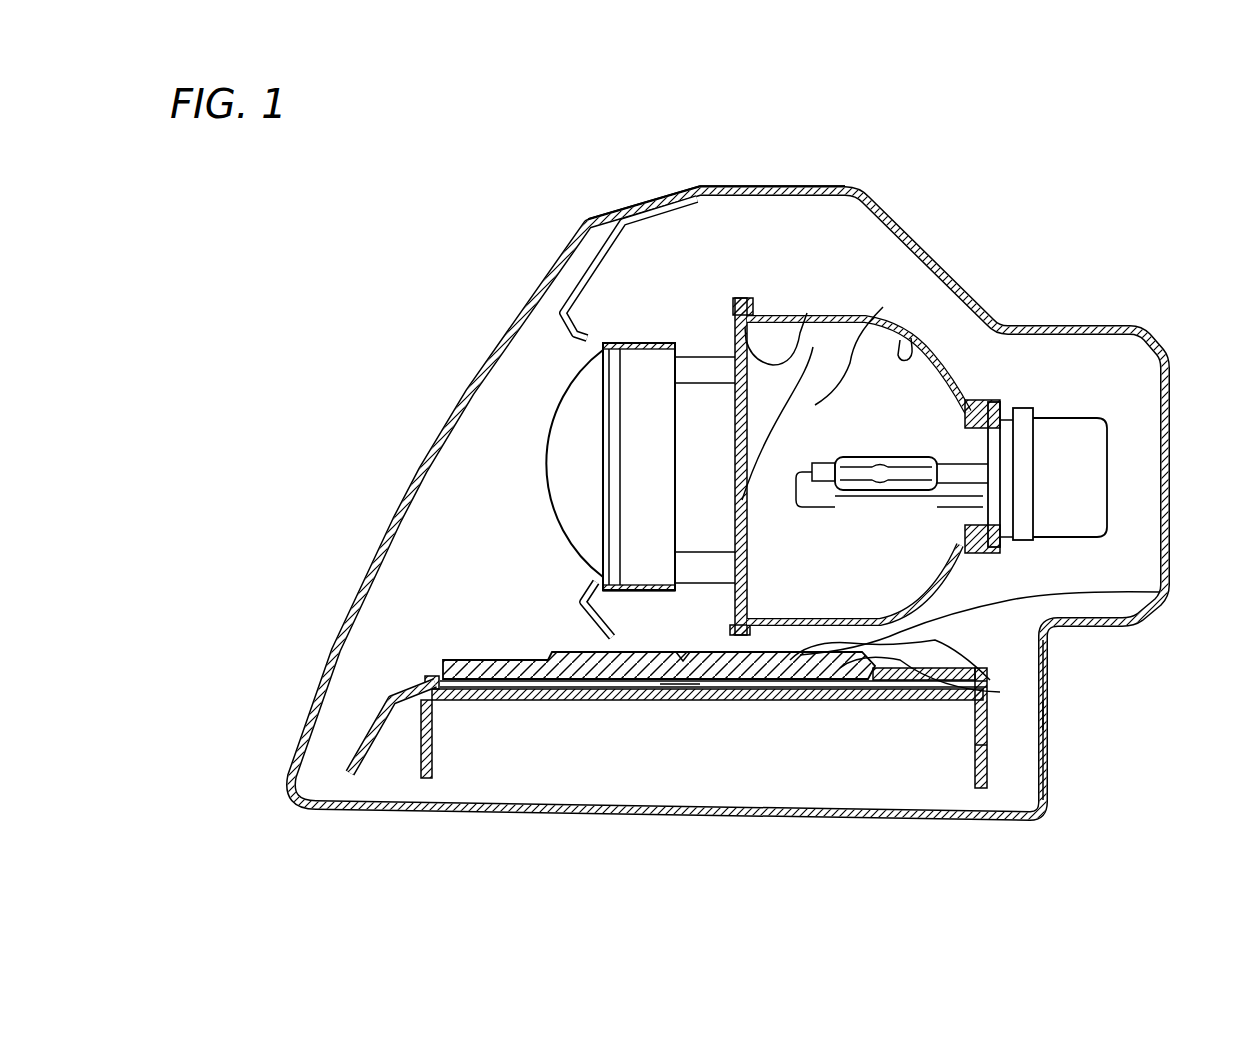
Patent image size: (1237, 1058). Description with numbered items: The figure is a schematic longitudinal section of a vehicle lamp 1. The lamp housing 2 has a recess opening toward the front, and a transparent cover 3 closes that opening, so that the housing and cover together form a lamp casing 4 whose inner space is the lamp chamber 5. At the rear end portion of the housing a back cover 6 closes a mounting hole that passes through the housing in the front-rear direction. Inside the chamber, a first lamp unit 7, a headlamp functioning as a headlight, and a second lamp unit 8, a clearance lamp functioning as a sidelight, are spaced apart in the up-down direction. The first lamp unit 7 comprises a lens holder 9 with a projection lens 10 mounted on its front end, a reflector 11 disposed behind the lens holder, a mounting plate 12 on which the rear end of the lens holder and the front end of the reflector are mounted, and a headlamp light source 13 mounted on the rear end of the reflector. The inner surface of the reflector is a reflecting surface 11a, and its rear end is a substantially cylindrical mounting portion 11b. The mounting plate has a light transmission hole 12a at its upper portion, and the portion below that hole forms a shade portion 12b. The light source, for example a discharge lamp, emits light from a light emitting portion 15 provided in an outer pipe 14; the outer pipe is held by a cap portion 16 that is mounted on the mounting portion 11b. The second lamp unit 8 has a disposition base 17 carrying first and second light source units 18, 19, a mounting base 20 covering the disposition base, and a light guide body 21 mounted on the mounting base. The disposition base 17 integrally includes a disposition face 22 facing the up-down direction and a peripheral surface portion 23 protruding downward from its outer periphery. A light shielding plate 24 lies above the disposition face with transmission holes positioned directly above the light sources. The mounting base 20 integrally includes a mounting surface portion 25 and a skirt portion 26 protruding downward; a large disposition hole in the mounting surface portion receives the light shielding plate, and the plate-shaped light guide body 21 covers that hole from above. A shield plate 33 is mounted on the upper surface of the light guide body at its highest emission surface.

The vehicle lamp 1 is at (387, 278).
The lamp housing 2 is at (750, 184).
The transparent cover 3 is at (585, 218).
The lamp casing 4 is at (657, 134).
The lamp chamber 5 is at (459, 522).
The back cover 6 is at (1170, 410).
The first lamp unit 7 is at (932, 352).
The second lamp unit 8 is at (1040, 677).
The lens holder 9 is at (743, 297).
The projection lens 10 is at (560, 420).
The reflector 11 is at (893, 457).
The reflecting surface 11a is at (900, 340).
The mounting portion 11b is at (995, 410).
The mounting plate 12 is at (807, 313).
The light transmission hole 12a is at (813, 347).
The shade portion 12b is at (883, 307).
The headlamp light source 13 is at (913, 452).
The outer pipe 14 is at (1055, 430).
The light emitting portion 15 is at (967, 400).
The cap portion 16 is at (1025, 410).
The disposition base 17 is at (765, 701).
The first light source unit 18 is at (887, 701).
The second light source unit 19 is at (680, 701).
The mounting base 20 is at (1045, 714).
The light guide body 21 is at (545, 655).
The disposition face 22 is at (793, 701).
The peripheral surface portion 23 is at (973, 750).
The light shielding plate 24 is at (503, 680).
The mounting surface portion 25 is at (1037, 658).
The skirt portion 26 is at (365, 730).
The shield plate 33 is at (1160, 598).